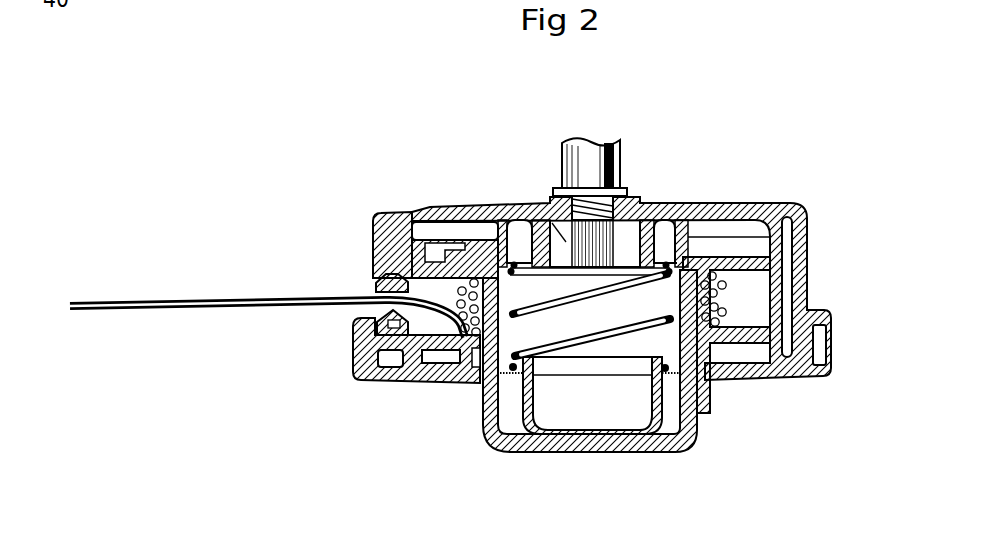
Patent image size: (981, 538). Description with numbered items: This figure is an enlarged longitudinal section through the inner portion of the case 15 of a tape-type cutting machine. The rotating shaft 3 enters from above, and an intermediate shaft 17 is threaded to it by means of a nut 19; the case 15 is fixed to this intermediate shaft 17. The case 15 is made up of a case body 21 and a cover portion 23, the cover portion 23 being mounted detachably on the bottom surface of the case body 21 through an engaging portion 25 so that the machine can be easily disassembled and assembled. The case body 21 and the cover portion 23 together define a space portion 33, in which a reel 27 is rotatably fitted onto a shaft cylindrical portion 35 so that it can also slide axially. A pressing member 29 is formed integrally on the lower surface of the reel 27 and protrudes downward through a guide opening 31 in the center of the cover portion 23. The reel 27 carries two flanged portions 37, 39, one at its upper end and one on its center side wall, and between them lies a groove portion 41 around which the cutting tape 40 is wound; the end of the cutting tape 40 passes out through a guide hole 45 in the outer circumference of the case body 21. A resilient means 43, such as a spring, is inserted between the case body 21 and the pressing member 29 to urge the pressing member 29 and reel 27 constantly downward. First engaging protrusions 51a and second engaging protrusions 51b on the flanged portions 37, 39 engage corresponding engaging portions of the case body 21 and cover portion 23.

The rotating shaft 3 is at (584, 152).
The case 15 is at (743, 190).
The intermediate shaft 17 is at (627, 192).
The nut 19 is at (541, 222).
The case body 21 is at (719, 205).
The cover portion 23 is at (443, 383).
The engaging portion 25 is at (826, 303).
The reel 27 is at (738, 205).
The pressing member 29 is at (580, 445).
The guide opening 31 is at (478, 383).
The space portion 33 is at (417, 221).
The shaft cylindrical portion 35 is at (487, 237).
The flanged portion 37 is at (398, 208).
The flanged portion 39 is at (403, 383).
The cutting tape 40 is at (191, 299).
The groove portion 41 is at (743, 285).
The resilient means 43 is at (676, 378).
The guide hole 45 is at (374, 272).
The first engaging protrusions 51a is at (680, 205).
The second engaging protrusions 51b is at (720, 388).